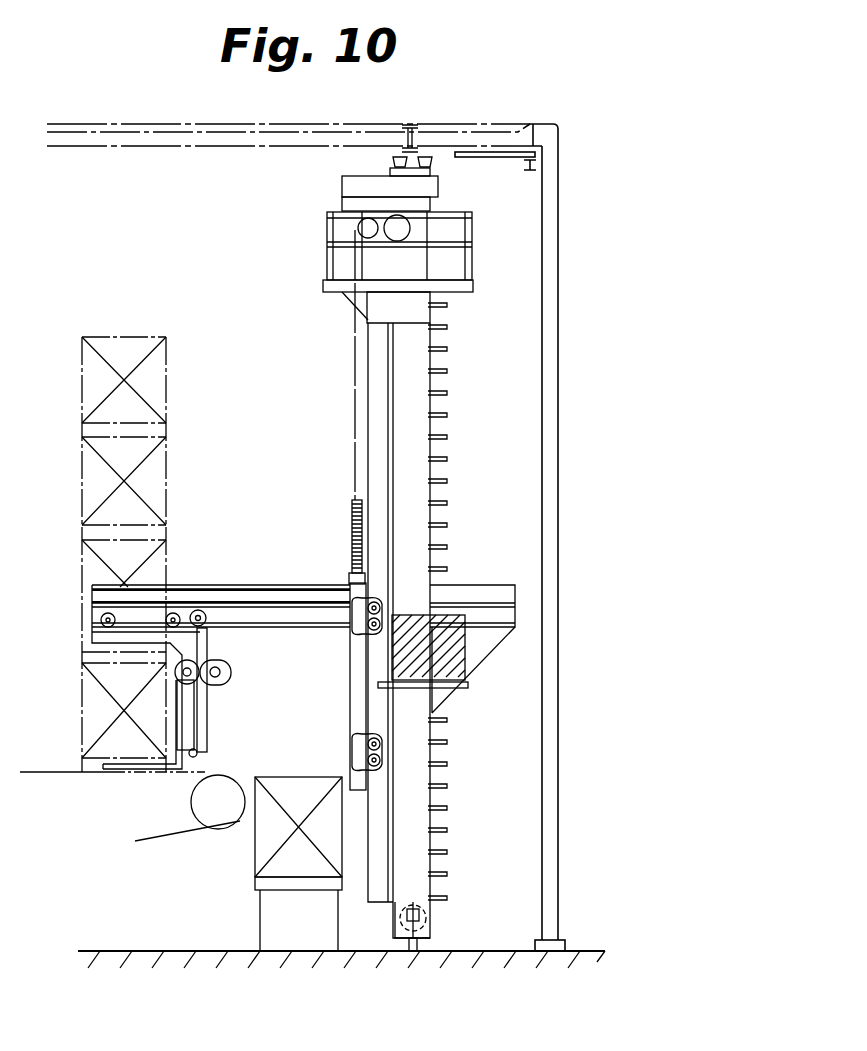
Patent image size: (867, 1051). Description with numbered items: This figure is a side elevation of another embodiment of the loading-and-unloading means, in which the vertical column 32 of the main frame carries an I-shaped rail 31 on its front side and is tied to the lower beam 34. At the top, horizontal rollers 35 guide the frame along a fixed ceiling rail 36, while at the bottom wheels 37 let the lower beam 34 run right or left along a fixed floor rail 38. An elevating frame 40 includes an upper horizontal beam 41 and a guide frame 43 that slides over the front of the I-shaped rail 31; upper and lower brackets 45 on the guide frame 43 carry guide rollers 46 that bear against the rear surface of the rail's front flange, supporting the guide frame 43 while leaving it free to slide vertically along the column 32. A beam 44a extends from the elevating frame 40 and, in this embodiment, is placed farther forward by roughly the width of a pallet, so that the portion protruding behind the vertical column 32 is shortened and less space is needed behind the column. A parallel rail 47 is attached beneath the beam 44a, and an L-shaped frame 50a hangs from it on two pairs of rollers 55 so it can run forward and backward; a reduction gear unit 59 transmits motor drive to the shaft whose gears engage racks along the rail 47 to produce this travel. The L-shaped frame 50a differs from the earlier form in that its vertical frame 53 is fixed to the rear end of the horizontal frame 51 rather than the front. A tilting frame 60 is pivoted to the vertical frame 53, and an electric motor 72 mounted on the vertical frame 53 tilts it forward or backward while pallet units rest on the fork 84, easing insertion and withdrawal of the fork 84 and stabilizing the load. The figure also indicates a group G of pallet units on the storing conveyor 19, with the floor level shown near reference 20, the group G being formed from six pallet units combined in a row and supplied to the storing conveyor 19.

The storing conveyor 19 is at (262, 903).
The floor level line 20 is at (112, 753).
The I-shaped rail 31 is at (372, 403).
The vertical column 32 is at (427, 405).
The lower beam 34 is at (430, 918).
The horizontal rollers 35 is at (390, 158).
The fixed ceiling rail 36 is at (407, 150).
The wheels 37 is at (400, 932).
The fixed floor rail 38 is at (420, 945).
The elevating frame 40 is at (332, 577).
The upper horizontal beam 41 is at (200, 665).
The guide frame 43 is at (352, 705).
The beam 44a is at (255, 590).
The brackets 45 is at (362, 617).
The guide rollers 46 is at (370, 648).
The parallel rail 47 is at (285, 625).
The L-shaped frame 50a is at (286, 721).
The horizontal frame 51 is at (92, 638).
The vertical frame 53 is at (207, 740).
The rollers 55 is at (174, 612).
The reduction gear unit 59 is at (200, 610).
The tilting frame 60 is at (200, 757).
The electric motor 72 is at (231, 678).
The fork 84 is at (117, 769).
The group G is at (255, 838).